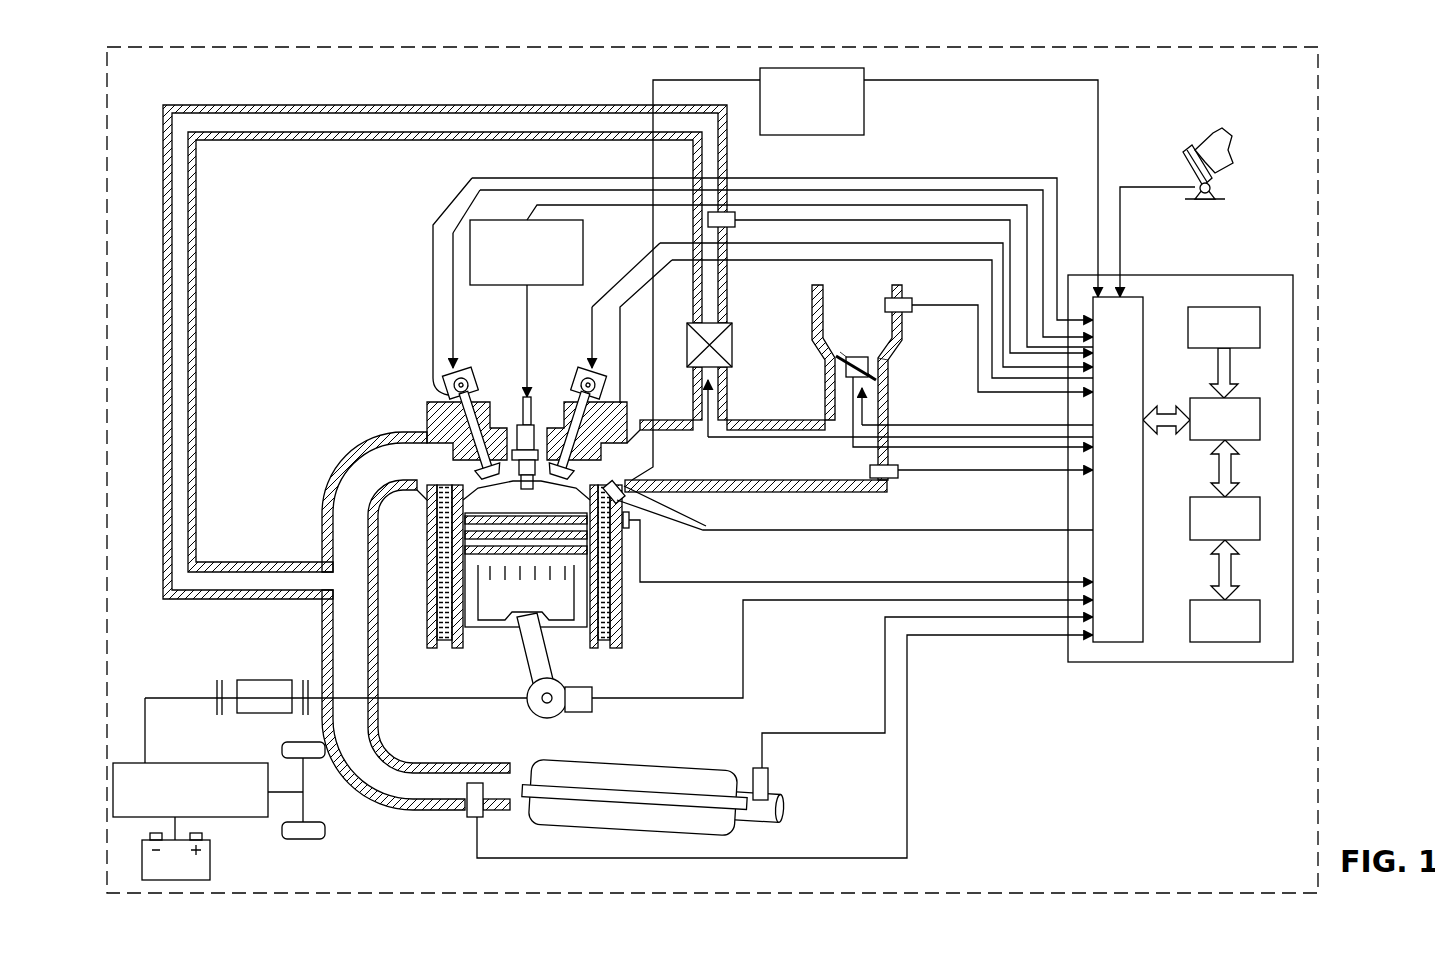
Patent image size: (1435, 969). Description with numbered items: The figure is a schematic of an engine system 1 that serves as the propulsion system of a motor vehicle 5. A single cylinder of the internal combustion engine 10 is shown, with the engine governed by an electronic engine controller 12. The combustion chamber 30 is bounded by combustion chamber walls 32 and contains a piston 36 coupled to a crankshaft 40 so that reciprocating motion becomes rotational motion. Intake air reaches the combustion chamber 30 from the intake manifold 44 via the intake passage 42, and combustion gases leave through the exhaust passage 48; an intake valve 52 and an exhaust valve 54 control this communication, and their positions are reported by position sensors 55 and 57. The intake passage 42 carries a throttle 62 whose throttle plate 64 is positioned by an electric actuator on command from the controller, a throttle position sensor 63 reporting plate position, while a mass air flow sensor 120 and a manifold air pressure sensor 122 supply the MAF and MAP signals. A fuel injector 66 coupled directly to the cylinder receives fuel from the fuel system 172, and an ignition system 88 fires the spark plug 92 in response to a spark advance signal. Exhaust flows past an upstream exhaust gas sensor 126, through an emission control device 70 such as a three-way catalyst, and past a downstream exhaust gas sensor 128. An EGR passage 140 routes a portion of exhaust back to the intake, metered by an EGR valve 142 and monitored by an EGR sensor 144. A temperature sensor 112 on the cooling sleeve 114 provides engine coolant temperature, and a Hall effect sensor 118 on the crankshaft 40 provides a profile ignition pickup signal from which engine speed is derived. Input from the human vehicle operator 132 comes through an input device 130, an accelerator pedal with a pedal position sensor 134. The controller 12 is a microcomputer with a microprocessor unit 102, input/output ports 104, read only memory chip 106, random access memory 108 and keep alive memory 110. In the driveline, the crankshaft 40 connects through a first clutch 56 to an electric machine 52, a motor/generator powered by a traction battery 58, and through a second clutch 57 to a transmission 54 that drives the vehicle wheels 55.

The engine system 1 is at (1113, 727).
The motor vehicle 5 is at (1318, 85).
The internal combustion engine 10 is at (358, 353).
The electronic engine controller 12 is at (1276, 275).
The combustion chamber 30 is at (437, 601).
The combustion chamber walls 32 is at (463, 650).
The piston 36 is at (512, 640).
The crankshaft 40 is at (533, 716).
The intake passage 42 is at (857, 382).
The intake manifold 44 is at (756, 456).
The exhaust passage 48 is at (416, 621).
The intake valve / electric machine 52 is at (566, 447).
The exhaust valve / transmission 54 is at (476, 446).
The intake valve position sensor / vehicle wheels 55 is at (597, 393).
The first clutch 56 is at (215, 688).
The exhaust valve position sensor / second clutch 57 is at (452, 381).
The traction battery 58 is at (210, 853).
The throttle 62 is at (880, 364).
The throttle position sensor 63 is at (848, 386).
The throttle plate 64 is at (838, 362).
The fuel injector 66 is at (632, 502).
The emission control device 70 is at (705, 765).
The ignition system 88 is at (483, 222).
The spark plug 92 is at (531, 418).
The microprocessor unit 102 is at (1262, 420).
The input/output ports 104 is at (1145, 313).
The read only memory chip 106 is at (1262, 330).
The random access memory 108 is at (1262, 520).
The keep alive memory 110 is at (1262, 622).
The temperature sensor 112 is at (636, 528).
The cooling sleeve 114 is at (618, 600).
The Hall effect sensor 118 is at (580, 712).
The mass air flow sensor 120 is at (905, 298).
The manifold air pressure sensor 122 is at (895, 478).
The upstream exhaust gas sensor 126 is at (470, 818).
The downstream exhaust gas sensor 128 is at (770, 778).
The input device 130 is at (1183, 162).
The human vehicle operator 132 is at (1233, 151).
The pedal position sensor 134 is at (1212, 188).
The EGR passage 140 is at (442, 105).
The EGR valve 142 is at (732, 352).
The EGR sensor 144 is at (733, 228).
The fuel system 172 is at (864, 125).